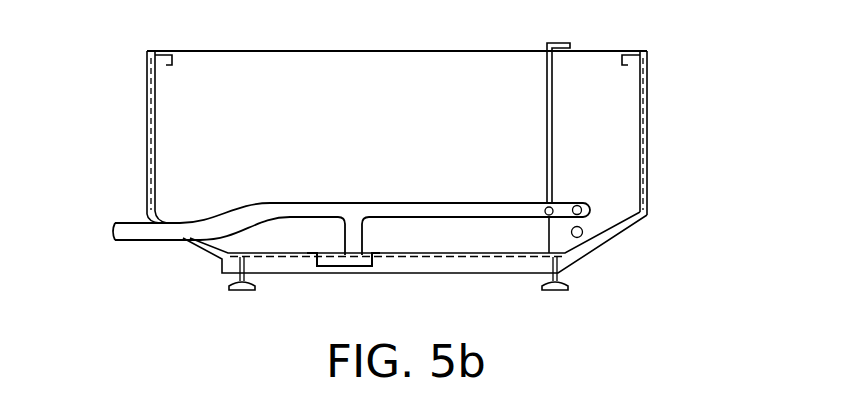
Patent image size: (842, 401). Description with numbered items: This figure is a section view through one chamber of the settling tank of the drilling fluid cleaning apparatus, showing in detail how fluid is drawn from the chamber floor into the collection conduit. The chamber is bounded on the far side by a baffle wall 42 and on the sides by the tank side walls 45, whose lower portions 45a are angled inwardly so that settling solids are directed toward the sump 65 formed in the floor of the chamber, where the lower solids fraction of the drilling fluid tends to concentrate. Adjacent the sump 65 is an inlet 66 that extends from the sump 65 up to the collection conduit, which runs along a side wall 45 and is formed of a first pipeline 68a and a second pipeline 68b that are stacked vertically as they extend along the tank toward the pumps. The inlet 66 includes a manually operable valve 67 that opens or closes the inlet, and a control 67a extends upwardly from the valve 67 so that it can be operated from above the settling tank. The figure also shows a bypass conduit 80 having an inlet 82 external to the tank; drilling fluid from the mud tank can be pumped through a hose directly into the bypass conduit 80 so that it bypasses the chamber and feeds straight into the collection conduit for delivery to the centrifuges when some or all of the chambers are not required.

The baffle wall 42 is at (490, 121).
The tank side wall 45 is at (650, 118).
The lower portion of tank side wall 45a is at (207, 257).
The sump 65 is at (345, 268).
The inlet 66 is at (352, 240).
The valve 67 is at (550, 255).
The control 67a is at (545, 73).
The first pipeline 68a is at (582, 236).
The second pipeline 68b is at (585, 203).
The bypass conduit 80 is at (133, 228).
The inlet of bypass conduit 82 is at (113, 229).